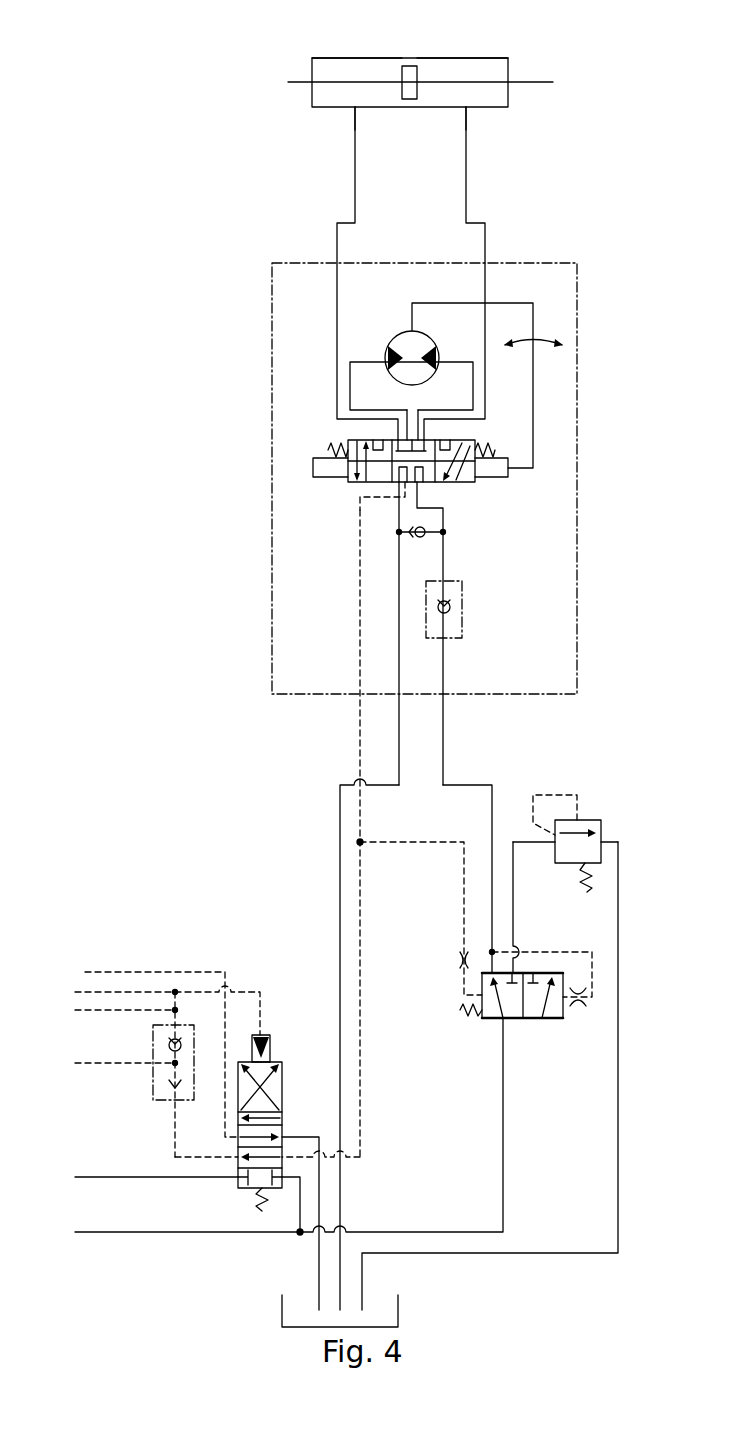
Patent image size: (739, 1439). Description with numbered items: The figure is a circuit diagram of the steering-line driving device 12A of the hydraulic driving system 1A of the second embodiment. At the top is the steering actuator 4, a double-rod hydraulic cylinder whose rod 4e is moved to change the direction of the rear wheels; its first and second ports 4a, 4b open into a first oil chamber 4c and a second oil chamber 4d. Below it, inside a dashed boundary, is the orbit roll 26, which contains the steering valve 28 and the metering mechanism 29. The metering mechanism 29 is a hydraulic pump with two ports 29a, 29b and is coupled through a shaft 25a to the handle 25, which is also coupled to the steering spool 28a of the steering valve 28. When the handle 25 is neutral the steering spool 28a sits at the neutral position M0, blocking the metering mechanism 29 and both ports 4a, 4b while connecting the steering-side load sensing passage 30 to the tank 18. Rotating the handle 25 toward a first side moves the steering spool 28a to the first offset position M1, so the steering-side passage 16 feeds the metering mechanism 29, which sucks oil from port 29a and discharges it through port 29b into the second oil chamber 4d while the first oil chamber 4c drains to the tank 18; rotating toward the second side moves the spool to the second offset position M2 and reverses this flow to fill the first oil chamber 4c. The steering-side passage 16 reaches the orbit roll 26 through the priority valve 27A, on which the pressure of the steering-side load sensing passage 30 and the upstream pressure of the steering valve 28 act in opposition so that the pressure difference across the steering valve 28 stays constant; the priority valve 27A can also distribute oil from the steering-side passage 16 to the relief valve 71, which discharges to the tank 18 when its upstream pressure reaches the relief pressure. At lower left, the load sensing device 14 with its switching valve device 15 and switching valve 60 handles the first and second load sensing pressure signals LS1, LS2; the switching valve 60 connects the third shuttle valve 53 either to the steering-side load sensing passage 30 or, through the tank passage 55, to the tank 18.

The hydraulic driving system 1A is at (637, 78).
The steering actuator 4 is at (412, 44).
The first port 4a is at (351, 110).
The second port 4b is at (468, 110).
The first oil chamber 4c is at (334, 64).
The second oil chamber 4d is at (487, 64).
The rod 4e is at (406, 67).
The steering-line driving device 12A is at (588, 193).
The orbit roll 26 is at (577, 392).
The metering mechanism 29 is at (405, 344).
The port 29a is at (386, 351).
The port 29b is at (438, 351).
The shaft 25a is at (514, 304).
The handle 25 is at (323, 470).
The neutral position M0 is at (424, 478).
The first offset position M1 is at (352, 440).
The second offset position M2 is at (470, 440).
The steering valve 28 is at (474, 480).
The steering spool 28a is at (350, 484).
The steering-side load sensing passage 30 is at (356, 731).
The first load sensing pressure signal LS1 is at (124, 985).
The second load sensing pressure signal LS2 is at (365, 1118).
The relief valve 71 is at (593, 818).
The priority valve 27A is at (533, 1010).
The steering-side passage 16 is at (505, 1135).
The load sensing device 14 is at (212, 1068).
The switching valve device 15 is at (279, 1068).
The third shuttle valve 53 is at (153, 1105).
The switching valve 60 is at (282, 1060).
The tank passage 55 is at (316, 1132).
The tank 18 is at (300, 1302).